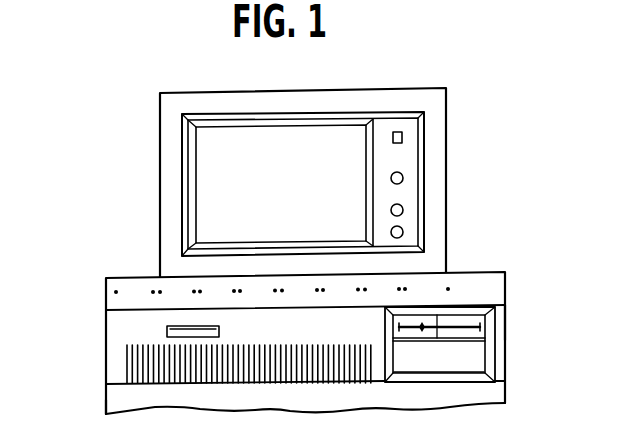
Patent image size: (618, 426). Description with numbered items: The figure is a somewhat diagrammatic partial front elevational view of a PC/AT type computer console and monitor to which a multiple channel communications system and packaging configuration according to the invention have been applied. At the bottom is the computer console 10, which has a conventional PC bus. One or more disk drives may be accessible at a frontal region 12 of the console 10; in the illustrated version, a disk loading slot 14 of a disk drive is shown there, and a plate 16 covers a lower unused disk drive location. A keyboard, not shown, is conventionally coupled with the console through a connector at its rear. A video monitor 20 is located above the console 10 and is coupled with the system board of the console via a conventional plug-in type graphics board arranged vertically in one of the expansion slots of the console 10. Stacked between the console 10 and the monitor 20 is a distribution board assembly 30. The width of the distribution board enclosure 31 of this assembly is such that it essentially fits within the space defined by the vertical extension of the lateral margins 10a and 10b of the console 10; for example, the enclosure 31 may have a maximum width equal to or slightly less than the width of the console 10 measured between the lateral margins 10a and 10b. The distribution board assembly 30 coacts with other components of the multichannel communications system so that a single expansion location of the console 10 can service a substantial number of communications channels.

The video monitor 20 is at (451, 138).
The computer console 10 is at (104, 339).
The lateral margin 10a is at (108, 375).
The lateral margin 10b is at (508, 319).
The distribution board assembly 30 is at (509, 281).
The distribution board enclosure 31 is at (105, 298).
The frontal region 12 is at (490, 329).
The disk loading slot 14 is at (458, 324).
The plate 16 is at (477, 361).